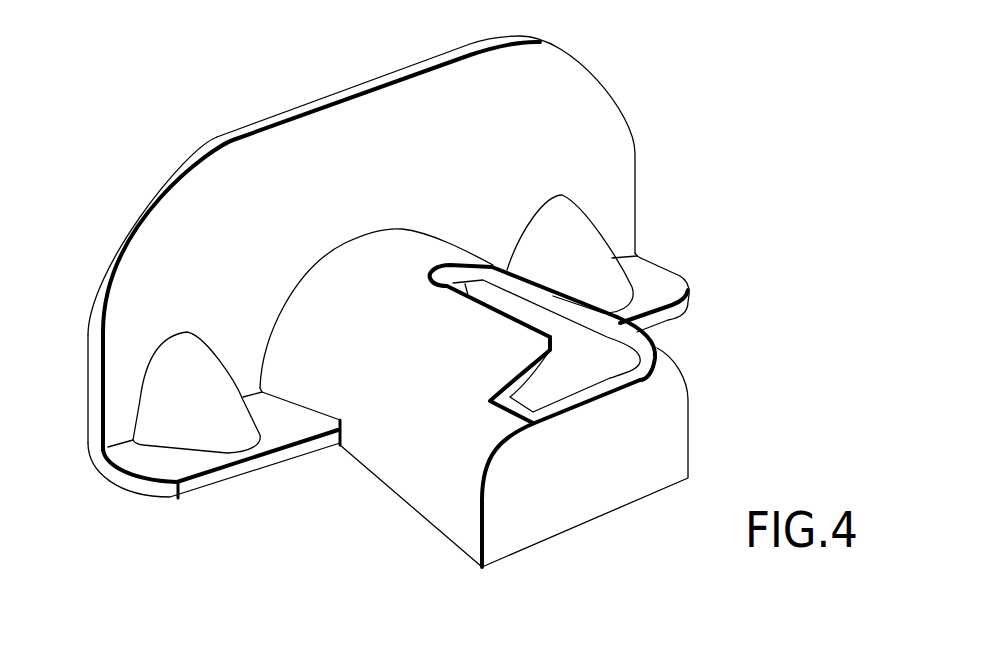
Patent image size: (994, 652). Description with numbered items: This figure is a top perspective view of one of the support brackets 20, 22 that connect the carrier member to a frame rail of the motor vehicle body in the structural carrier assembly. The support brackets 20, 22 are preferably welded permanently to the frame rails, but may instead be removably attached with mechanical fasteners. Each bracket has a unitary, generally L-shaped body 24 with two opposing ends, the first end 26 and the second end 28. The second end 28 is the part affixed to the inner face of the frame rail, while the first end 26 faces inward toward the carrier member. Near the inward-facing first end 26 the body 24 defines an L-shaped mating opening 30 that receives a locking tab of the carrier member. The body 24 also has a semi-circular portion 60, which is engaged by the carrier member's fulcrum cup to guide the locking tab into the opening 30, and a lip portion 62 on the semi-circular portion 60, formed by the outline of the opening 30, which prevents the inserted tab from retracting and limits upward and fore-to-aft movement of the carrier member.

The support bracket 20 is at (619, 51).
The support bracket 22 is at (409, 291).
The support bracket body 24 is at (630, 184).
The first end 26 is at (580, 518).
The second end 28 is at (138, 202).
The opening 30 is at (540, 392).
The semi-circular portion 60 is at (388, 484).
The lip portion 62 is at (467, 315).